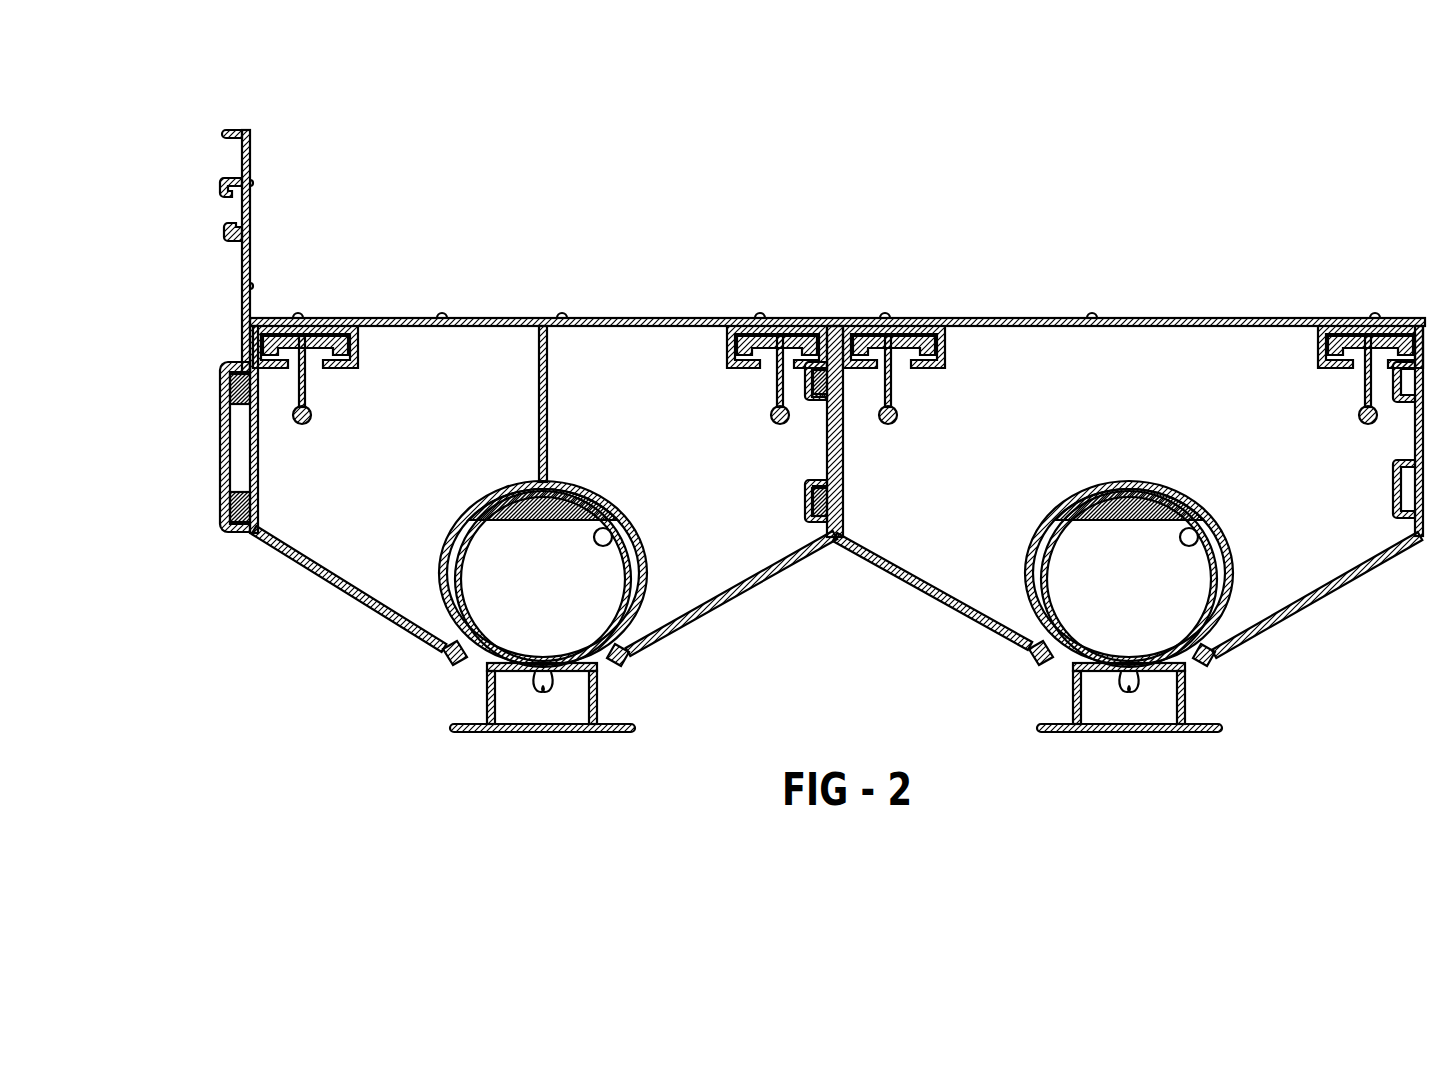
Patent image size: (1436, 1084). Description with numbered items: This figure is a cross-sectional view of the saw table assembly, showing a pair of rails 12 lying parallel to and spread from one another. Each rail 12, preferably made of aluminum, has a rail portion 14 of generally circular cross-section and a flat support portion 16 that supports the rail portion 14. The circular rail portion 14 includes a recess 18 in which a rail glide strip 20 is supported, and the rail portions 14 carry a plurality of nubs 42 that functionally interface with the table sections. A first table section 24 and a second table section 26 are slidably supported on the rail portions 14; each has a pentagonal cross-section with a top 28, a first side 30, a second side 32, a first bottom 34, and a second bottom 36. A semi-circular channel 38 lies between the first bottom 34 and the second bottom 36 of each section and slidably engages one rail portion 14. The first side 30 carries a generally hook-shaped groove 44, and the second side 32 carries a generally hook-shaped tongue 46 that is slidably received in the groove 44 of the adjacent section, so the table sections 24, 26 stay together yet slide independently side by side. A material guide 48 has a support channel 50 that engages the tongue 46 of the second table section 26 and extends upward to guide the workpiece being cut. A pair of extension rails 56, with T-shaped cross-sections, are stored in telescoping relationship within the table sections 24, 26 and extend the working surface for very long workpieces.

The rail 12 is at (478, 664).
The rail portion 14 is at (603, 655).
The flat support portion 16 is at (543, 733).
The recess 18 is at (632, 538).
The rail glide strip 20 is at (580, 500).
The first table section 24 is at (1238, 318).
The second table section 26 is at (549, 318).
The top 28 is at (442, 318).
The first side 30 is at (827, 470).
The second side 32 is at (258, 440).
The first bottom 34 is at (742, 600).
The second bottom 36 is at (333, 583).
The semi-circular channel 38 is at (494, 490).
The nub 42 is at (447, 656).
The groove 44 is at (805, 385).
The tongue 46 is at (232, 392).
The material guide 48 is at (252, 130).
The support channel 50 is at (222, 372).
The extension rail 56 is at (306, 330).